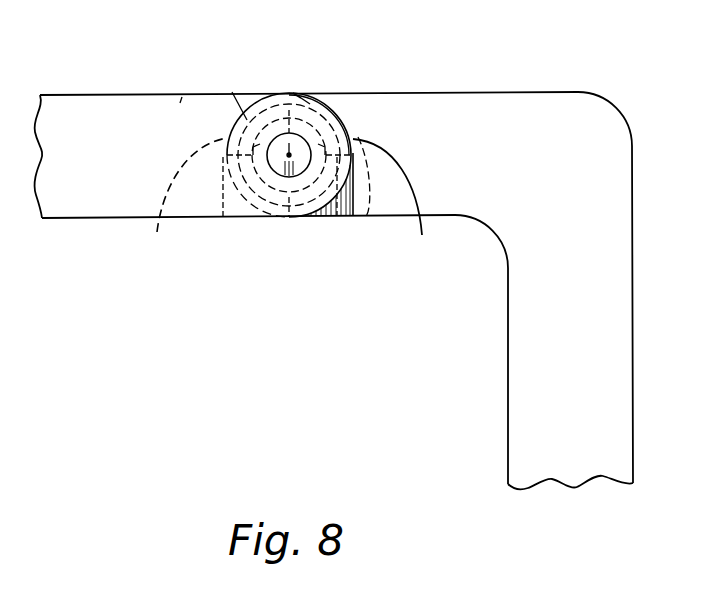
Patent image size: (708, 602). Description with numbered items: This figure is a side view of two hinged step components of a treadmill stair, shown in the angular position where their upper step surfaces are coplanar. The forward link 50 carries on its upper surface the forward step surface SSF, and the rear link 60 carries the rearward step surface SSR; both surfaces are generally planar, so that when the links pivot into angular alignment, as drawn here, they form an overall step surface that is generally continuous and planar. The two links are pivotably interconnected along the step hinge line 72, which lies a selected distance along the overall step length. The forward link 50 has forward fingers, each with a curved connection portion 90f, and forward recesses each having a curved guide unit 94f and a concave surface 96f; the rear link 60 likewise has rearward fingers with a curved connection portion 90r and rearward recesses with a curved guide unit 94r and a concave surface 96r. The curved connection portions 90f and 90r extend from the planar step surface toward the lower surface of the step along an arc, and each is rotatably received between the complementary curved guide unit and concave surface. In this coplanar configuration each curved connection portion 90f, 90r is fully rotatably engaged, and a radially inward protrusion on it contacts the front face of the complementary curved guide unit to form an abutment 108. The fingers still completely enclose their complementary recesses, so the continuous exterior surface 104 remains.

The rear link 60 is at (627, 322).
The forward link 50 is at (180, 103).
The step hinge line 72 is at (288, 156).
The curved connection portion 90f is at (241, 122).
The curved connection portion 90r is at (326, 106).
The curved guide unit 94f is at (232, 92).
The curved guide unit 94r is at (366, 216).
The concave surface 96f is at (171, 198).
The concave surface 96r is at (400, 198).
The continuous exterior surface 104 is at (298, 101).
The abutment 108 is at (306, 100).
The forward step surface SSF is at (138, 93).
The rearward step surface SSR is at (456, 91).